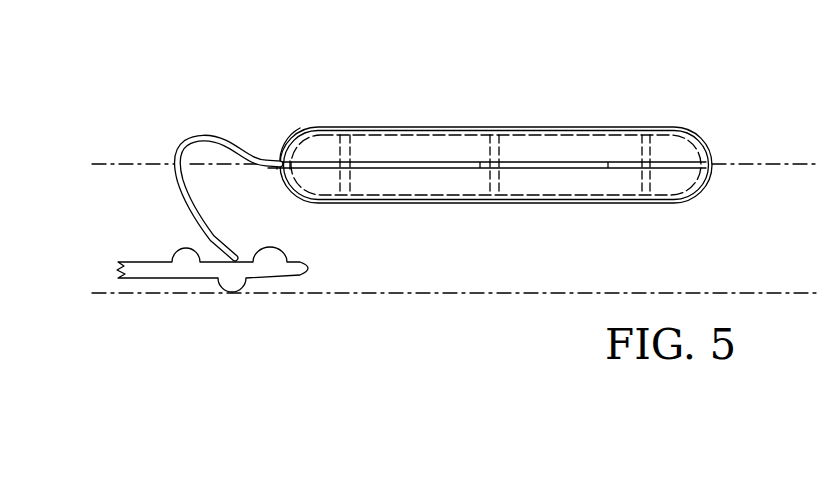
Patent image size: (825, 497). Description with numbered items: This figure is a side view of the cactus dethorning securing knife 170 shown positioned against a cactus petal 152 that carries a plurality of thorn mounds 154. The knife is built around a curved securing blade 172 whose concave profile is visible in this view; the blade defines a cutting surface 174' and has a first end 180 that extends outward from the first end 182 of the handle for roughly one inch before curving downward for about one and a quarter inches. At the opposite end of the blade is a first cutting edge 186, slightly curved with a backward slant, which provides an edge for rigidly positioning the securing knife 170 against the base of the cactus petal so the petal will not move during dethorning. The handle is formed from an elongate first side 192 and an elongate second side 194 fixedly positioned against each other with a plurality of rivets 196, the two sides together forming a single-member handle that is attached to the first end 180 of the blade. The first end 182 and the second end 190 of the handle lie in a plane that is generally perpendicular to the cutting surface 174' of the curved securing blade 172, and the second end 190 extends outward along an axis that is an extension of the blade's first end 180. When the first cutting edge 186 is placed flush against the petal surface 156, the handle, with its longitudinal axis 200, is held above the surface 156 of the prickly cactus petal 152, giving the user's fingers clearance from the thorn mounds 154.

The cactus dethorning securing knife 170 is at (499, 126).
The curved securing blade 172 is at (184, 145).
The cutting surface 174' is at (236, 214).
The first end of curved securing blade 180 is at (262, 150).
The first end of securing knife handle 182 is at (298, 128).
The first cutting edge 186 is at (235, 250).
The second end of handle 190 is at (702, 128).
The elongate first side 192 is at (548, 128).
The elongate second side 194 is at (448, 190).
The rivets 196 is at (350, 142).
The longitudinal axis 200 is at (806, 160).
The cactus petal 152 is at (262, 276).
The thorn mounds 154 is at (231, 291).
The petal surface 156 is at (144, 260).